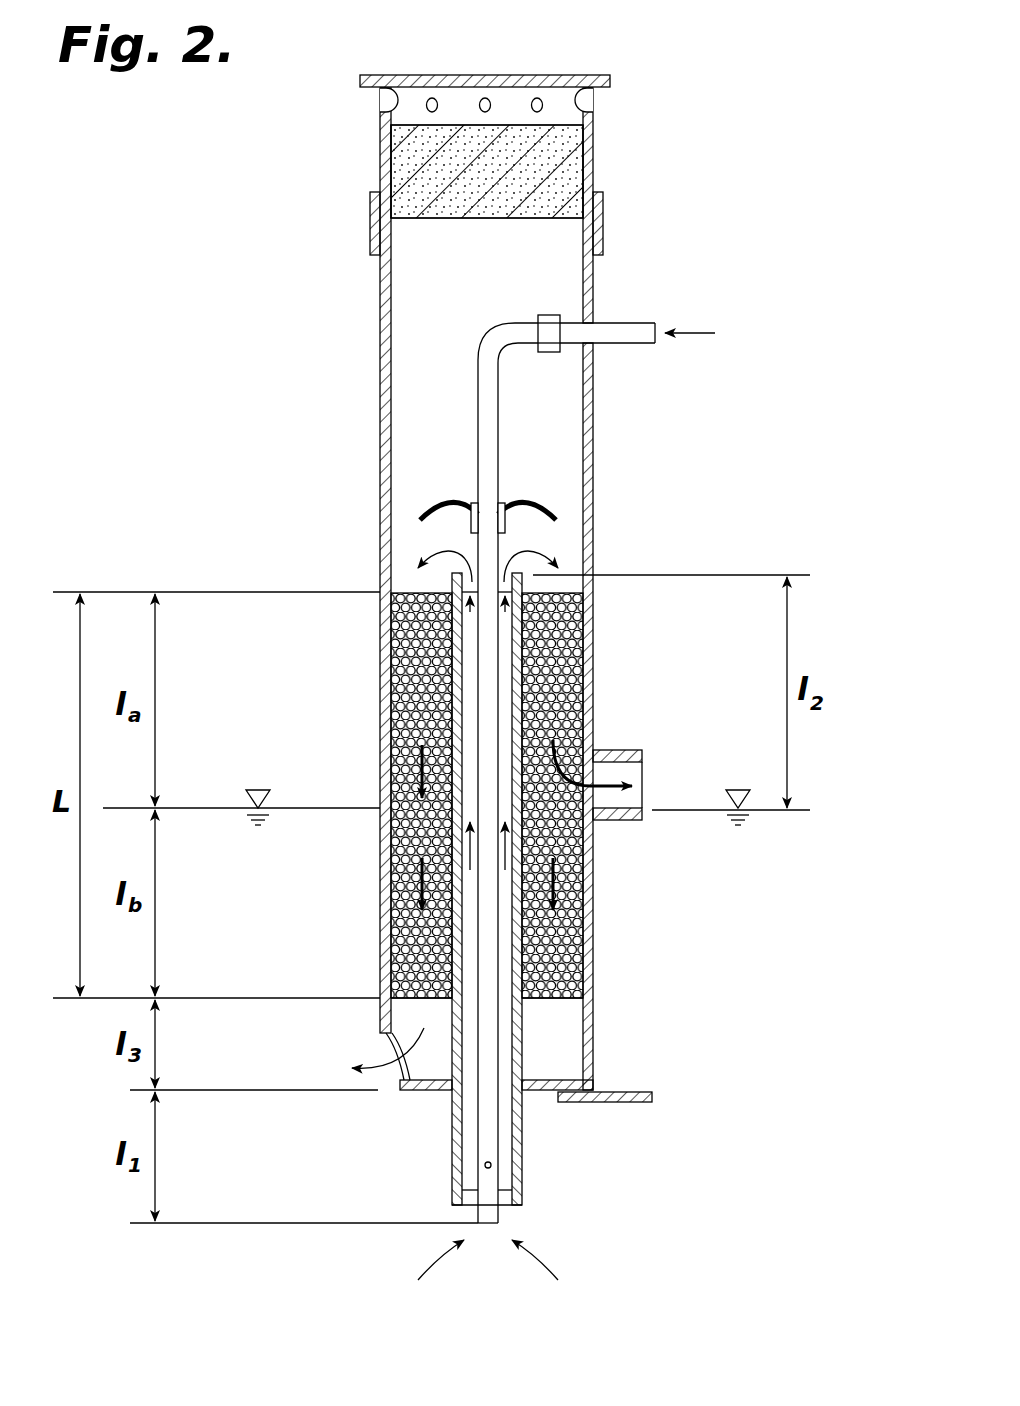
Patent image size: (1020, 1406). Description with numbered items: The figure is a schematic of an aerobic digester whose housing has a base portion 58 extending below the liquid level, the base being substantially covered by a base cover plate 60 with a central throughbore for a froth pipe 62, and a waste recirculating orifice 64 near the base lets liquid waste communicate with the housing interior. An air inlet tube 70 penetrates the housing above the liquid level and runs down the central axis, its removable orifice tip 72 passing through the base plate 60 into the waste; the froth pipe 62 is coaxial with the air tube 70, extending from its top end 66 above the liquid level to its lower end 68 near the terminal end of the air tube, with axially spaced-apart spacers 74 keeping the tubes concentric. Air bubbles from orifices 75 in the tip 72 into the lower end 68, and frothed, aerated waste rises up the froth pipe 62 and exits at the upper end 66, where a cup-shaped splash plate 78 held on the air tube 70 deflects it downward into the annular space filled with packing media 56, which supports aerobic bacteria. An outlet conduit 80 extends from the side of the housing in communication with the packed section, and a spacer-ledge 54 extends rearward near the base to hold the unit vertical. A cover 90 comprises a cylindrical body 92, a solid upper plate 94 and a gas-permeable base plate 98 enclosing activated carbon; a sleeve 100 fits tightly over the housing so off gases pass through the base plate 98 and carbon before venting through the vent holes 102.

The spacer-ledge 54 is at (655, 1092).
The packing media 56 is at (562, 648).
The base portion 58 is at (612, 1012).
The base cover plate 60 is at (540, 1093).
The froth pipe 62 is at (548, 1045).
The waste recirculating orifice 64 is at (384, 1043).
The top end of froth pipe 66 is at (436, 582).
The lower end of froth pipe 68 is at (436, 1182).
The air inlet tube 70 is at (613, 350).
The removable orifice tip 72 is at (493, 1222).
The spacers 74 is at (532, 578).
The orifices 75 is at (491, 1165).
The splash plate 78 is at (532, 503).
The outlet conduit 80 is at (614, 750).
The cover 90 is at (680, 172).
The cylindrical body 92 is at (593, 140).
The upper plate 94 is at (555, 75).
The gas-permeable base plate 98 is at (532, 218).
The sleeve 100 is at (603, 230).
The vent holes 102 is at (537, 98).